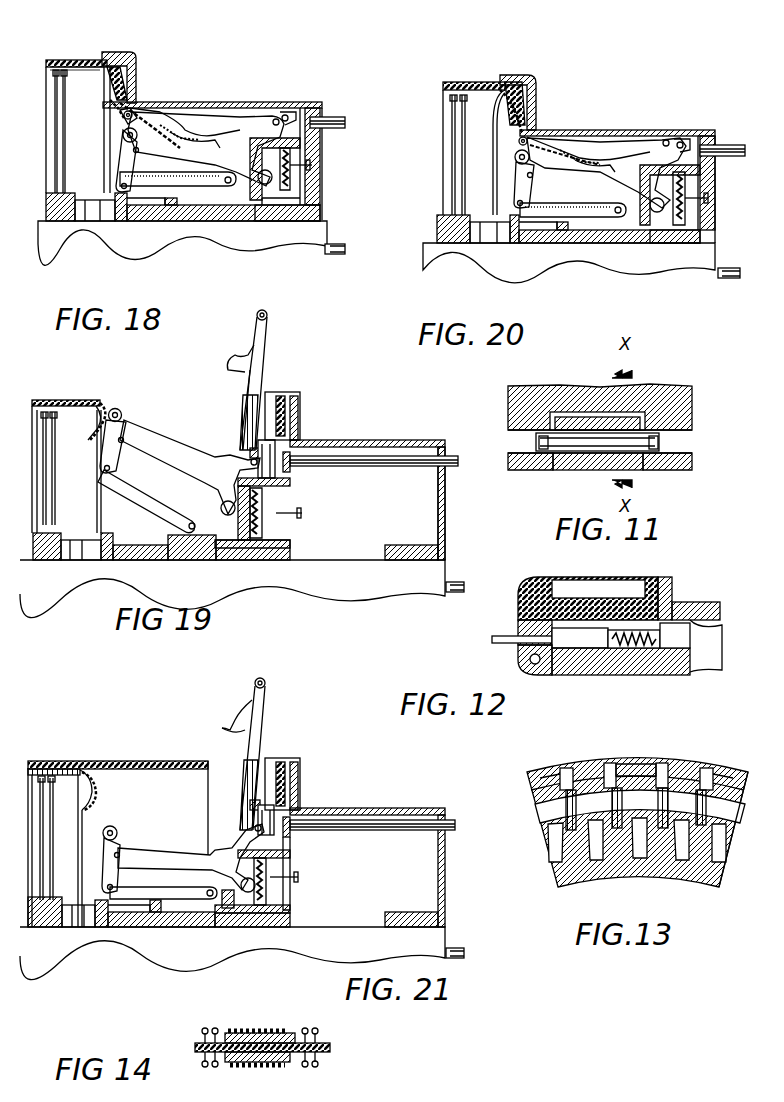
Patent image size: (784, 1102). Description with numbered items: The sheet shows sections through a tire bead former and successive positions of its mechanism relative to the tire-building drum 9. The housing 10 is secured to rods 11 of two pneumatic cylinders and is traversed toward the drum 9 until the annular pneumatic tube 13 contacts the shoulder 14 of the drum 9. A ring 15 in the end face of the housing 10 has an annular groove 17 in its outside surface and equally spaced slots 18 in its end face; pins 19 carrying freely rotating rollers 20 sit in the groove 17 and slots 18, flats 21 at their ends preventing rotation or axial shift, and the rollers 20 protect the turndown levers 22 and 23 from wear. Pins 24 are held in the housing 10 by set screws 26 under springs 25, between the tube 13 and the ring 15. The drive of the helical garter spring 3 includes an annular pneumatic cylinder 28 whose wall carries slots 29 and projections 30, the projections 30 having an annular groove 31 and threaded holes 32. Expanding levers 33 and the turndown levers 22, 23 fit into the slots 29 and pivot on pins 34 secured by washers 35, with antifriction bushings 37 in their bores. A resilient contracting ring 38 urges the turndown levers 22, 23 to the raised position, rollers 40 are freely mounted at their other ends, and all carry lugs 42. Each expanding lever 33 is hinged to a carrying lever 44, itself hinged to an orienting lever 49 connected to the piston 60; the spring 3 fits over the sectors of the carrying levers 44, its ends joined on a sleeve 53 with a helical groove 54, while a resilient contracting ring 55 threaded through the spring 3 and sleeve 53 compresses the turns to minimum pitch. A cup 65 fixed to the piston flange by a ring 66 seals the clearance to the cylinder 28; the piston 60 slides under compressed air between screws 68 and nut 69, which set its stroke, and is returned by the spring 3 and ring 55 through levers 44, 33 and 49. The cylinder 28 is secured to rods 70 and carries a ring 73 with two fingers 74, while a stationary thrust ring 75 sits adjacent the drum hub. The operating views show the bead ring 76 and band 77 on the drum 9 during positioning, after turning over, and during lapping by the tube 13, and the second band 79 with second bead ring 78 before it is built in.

In FIG. 18, the helical garter spring 3 is at (122, 136).
In FIG. 20, the helical garter spring 3 is at (514, 158).
In FIG. 19, the helical garter spring 3 is at (114, 408).
In FIG. 21, the helical garter spring 3 is at (114, 826).
In FIG. 14, the helical garter spring 3 is at (305, 1028).
In FIG. 18, the tire-building drum 9 is at (55, 72).
In FIG. 20, the tire-building drum 9 is at (452, 96).
In FIG. 19, the tire-building drum 9 is at (62, 412).
In FIG. 21, the tire-building drum 9 is at (66, 778).
In FIG. 18, the housing 10 is at (132, 53).
In FIG. 20, the housing 10 is at (536, 82).
In FIG. 19, the housing 10 is at (300, 400).
In FIG. 21, the housing 10 is at (300, 760).
In FIG. 12, the housing 10 is at (522, 625).
In FIG. 18, the rods 11 is at (333, 244).
In FIG. 20, the rods 11 is at (730, 268).
In FIG. 19, the rods 11 is at (454, 582).
In FIG. 21, the rods 11 is at (456, 948).
In FIG. 18, the annular pneumatic tube 13 is at (114, 66).
In FIG. 20, the annular pneumatic tube 13 is at (515, 103).
In FIG. 19, the annular pneumatic tube 13 is at (280, 396).
In FIG. 21, the annular pneumatic tube 13 is at (280, 762).
In FIG. 12, the annular pneumatic tube 13 is at (542, 585).
In FIG. 18, the shoulder 14 is at (90, 60).
In FIG. 11, the ring 15 is at (518, 405).
In FIG. 12, the ring 15 is at (575, 662).
In FIG. 11, the annular groove 17 is at (516, 445).
In FIG. 12, the annular groove 17 is at (540, 660).
In FIG. 11, the slots 18 is at (556, 415).
In FIG. 11, the pins 19 is at (568, 465).
In FIG. 18, the rollers 20 is at (140, 108).
In FIG. 20, the rollers 20 is at (540, 132).
In FIG. 19, the rollers 20 is at (258, 447).
In FIG. 21, the rollers 20 is at (290, 840).
In FIG. 11, the rollers 20 is at (596, 452).
In FIG. 11, the flats 21 is at (544, 450).
In FIG. 18, the turndown levers 22 is at (178, 108).
In FIG. 20, the turndown levers 22 is at (585, 135).
In FIG. 19, the turndown levers 22 is at (248, 400).
In FIG. 21, the turndown levers 22 is at (238, 715).
In FIG. 13, the turndown levers 22 is at (546, 775).
In FIG. 18, the turndown levers 23 is at (183, 120).
In FIG. 20, the turndown levers 23 is at (580, 148).
In FIG. 19, the turndown levers 23 is at (250, 412).
In FIG. 21, the turndown levers 23 is at (242, 720).
In FIG. 13, the turndown levers 23 is at (636, 765).
In FIG. 19, the pins 24 is at (252, 437).
In FIG. 21, the pins 24 is at (258, 812).
In FIG. 12, the pins 24 is at (505, 643).
In FIG. 12, the springs 25 is at (630, 648).
In FIG. 12, the set screws 26 is at (690, 638).
In FIG. 18, the annular pneumatic cylinder 28 is at (300, 140).
In FIG. 20, the annular pneumatic cylinder 28 is at (655, 165).
In FIG. 19, the annular pneumatic cylinder 28 is at (290, 544).
In FIG. 21, the annular pneumatic cylinder 28 is at (200, 927).
In FIG. 13, the slots 29 is at (553, 838).
In FIG. 13, the projections 30 is at (575, 840).
In FIG. 13, the annular groove 31 is at (533, 793).
In FIG. 13, the threaded holes 32 is at (616, 830).
In FIG. 18, the expanding levers 33 is at (222, 130).
In FIG. 20, the expanding levers 33 is at (633, 150).
In FIG. 19, the expanding levers 33 is at (155, 455).
In FIG. 21, the expanding levers 33 is at (138, 855).
In FIG. 13, the expanding levers 33 is at (588, 770).
In FIG. 13, the pins 34 is at (740, 800).
In FIG. 13, the washers 35 is at (704, 790).
In FIG. 13, the bushings 37 is at (660, 830).
In FIG. 18, the resilient contracting ring 38 is at (285, 112).
In FIG. 20, the resilient contracting ring 38 is at (682, 138).
In FIG. 19, the resilient contracting ring 38 is at (290, 484).
In FIG. 21, the resilient contracting ring 38 is at (255, 832).
In FIG. 18, the rollers 40 is at (114, 114).
In FIG. 20, the rollers 40 is at (517, 138).
In FIG. 19, the rollers 40 is at (268, 320).
In FIG. 21, the rollers 40 is at (266, 686).
In FIG. 18, the lugs 42 is at (210, 130).
In FIG. 20, the lugs 42 is at (610, 158).
In FIG. 19, the lugs 42 is at (246, 362).
In FIG. 21, the lugs 42 is at (222, 728).
In FIG. 18, the carrying levers 44 is at (118, 175).
In FIG. 20, the carrying levers 44 is at (530, 195).
In FIG. 19, the carrying levers 44 is at (124, 435).
In FIG. 21, the carrying levers 44 is at (108, 878).
In FIG. 18, the orienting levers 49 is at (210, 187).
In FIG. 20, the orienting levers 49 is at (605, 218).
In FIG. 19, the orienting levers 49 is at (148, 502).
In FIG. 21, the orienting levers 49 is at (168, 887).
In FIG. 14, the sleeve 53 is at (262, 1030).
In FIG. 14, the helical groove 54 is at (295, 1060).
In FIG. 14, the resilient contracting ring 55 is at (203, 1030).
In FIG. 18, the piston 60 is at (262, 205).
In FIG. 20, the piston 60 is at (655, 230).
In FIG. 19, the piston 60 is at (222, 560).
In FIG. 21, the piston 60 is at (240, 927).
In FIG. 18, the cup 65 is at (292, 221).
In FIG. 20, the cup 65 is at (680, 243).
In FIG. 19, the cup 65 is at (254, 548).
In FIG. 21, the cup 65 is at (268, 912).
In FIG. 18, the ring 66 is at (292, 185).
In FIG. 20, the ring 66 is at (690, 182).
In FIG. 19, the ring 66 is at (258, 520).
In FIG. 21, the ring 66 is at (268, 898).
In FIG. 18, the screws 68 is at (312, 165).
In FIG. 20, the screws 68 is at (710, 198).
In FIG. 19, the screws 68 is at (302, 513).
In FIG. 21, the screws 68 is at (300, 877).
In FIG. 18, the nut 69 is at (172, 221).
In FIG. 20, the nut 69 is at (570, 232).
In FIG. 19, the nut 69 is at (175, 560).
In FIG. 21, the nut 69 is at (158, 927).
In FIG. 18, the rods 70 is at (333, 117).
In FIG. 20, the rods 70 is at (733, 145).
In FIG. 19, the rods 70 is at (338, 456).
In FIG. 21, the rods 70 is at (370, 820).
In FIG. 18, the ring 73 is at (120, 221).
In FIG. 20, the ring 73 is at (514, 243).
In FIG. 19, the ring 73 is at (112, 557).
In FIG. 21, the ring 73 is at (104, 927).
In FIG. 18, the fingers 74 is at (90, 221).
In FIG. 20, the fingers 74 is at (485, 243).
In FIG. 19, the fingers 74 is at (90, 560).
In FIG. 21, the fingers 74 is at (85, 927).
In FIG. 18, the stationary thrust ring 75 is at (66, 221).
In FIG. 20, the stationary thrust ring 75 is at (468, 243).
In FIG. 19, the stationary thrust ring 75 is at (60, 560).
In FIG. 21, the stationary thrust ring 75 is at (55, 927).
In FIG. 18, the bead ring 76 is at (108, 97).
In FIG. 20, the bead ring 76 is at (508, 108).
In FIG. 19, the bead ring 76 is at (90, 445).
In FIG. 21, the bead ring 76 is at (98, 795).
In FIG. 18, the band 77 is at (70, 59).
In FIG. 20, the band 77 is at (470, 82).
In FIG. 19, the band 77 is at (75, 400).
In FIG. 21, the band 77 is at (40, 760).
In FIG. 21, the second bead ring 78 is at (255, 800).
In FIG. 21, the second band 79 is at (62, 769).